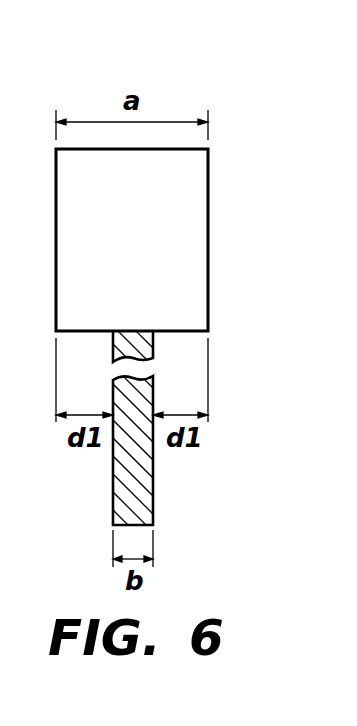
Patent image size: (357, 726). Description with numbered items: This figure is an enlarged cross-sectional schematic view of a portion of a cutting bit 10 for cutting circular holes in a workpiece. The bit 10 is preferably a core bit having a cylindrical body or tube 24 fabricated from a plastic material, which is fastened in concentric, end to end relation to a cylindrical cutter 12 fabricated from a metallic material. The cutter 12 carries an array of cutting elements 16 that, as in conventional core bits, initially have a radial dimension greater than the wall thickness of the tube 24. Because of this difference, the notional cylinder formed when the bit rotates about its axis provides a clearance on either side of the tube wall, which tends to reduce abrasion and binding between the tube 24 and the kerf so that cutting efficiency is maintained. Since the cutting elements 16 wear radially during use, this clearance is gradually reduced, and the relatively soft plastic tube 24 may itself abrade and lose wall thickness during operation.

The cutting bit 10 is at (198, 84).
The cylindrical cutter 12 is at (183, 340).
The cutting elements 16 is at (158, 255).
The cylindrical body 24 is at (140, 500).